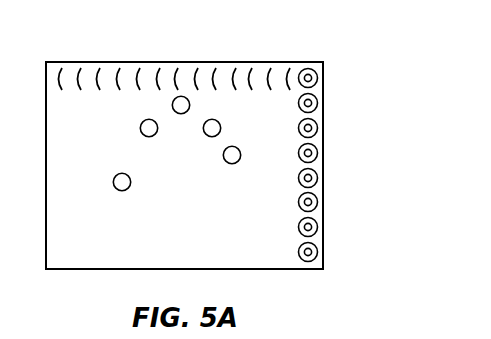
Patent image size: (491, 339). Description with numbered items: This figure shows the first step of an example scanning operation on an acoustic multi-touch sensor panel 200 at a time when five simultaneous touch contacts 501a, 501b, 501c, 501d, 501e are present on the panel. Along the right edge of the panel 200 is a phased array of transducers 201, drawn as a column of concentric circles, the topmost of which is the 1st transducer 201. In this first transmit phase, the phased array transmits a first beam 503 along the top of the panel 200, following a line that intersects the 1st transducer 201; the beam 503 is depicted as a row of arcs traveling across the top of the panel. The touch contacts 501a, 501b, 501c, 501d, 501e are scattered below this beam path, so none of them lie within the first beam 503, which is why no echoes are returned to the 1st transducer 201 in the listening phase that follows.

The sensor panel 200 is at (104, 47).
The first beam 503 is at (204, 70).
The transducer 201 is at (318, 78).
The touch contact 501a is at (119, 174).
The touch contact 501b is at (141, 124).
The touch contact 501c is at (181, 114).
The touch contact 501d is at (208, 121).
The touch contact 501e is at (231, 164).